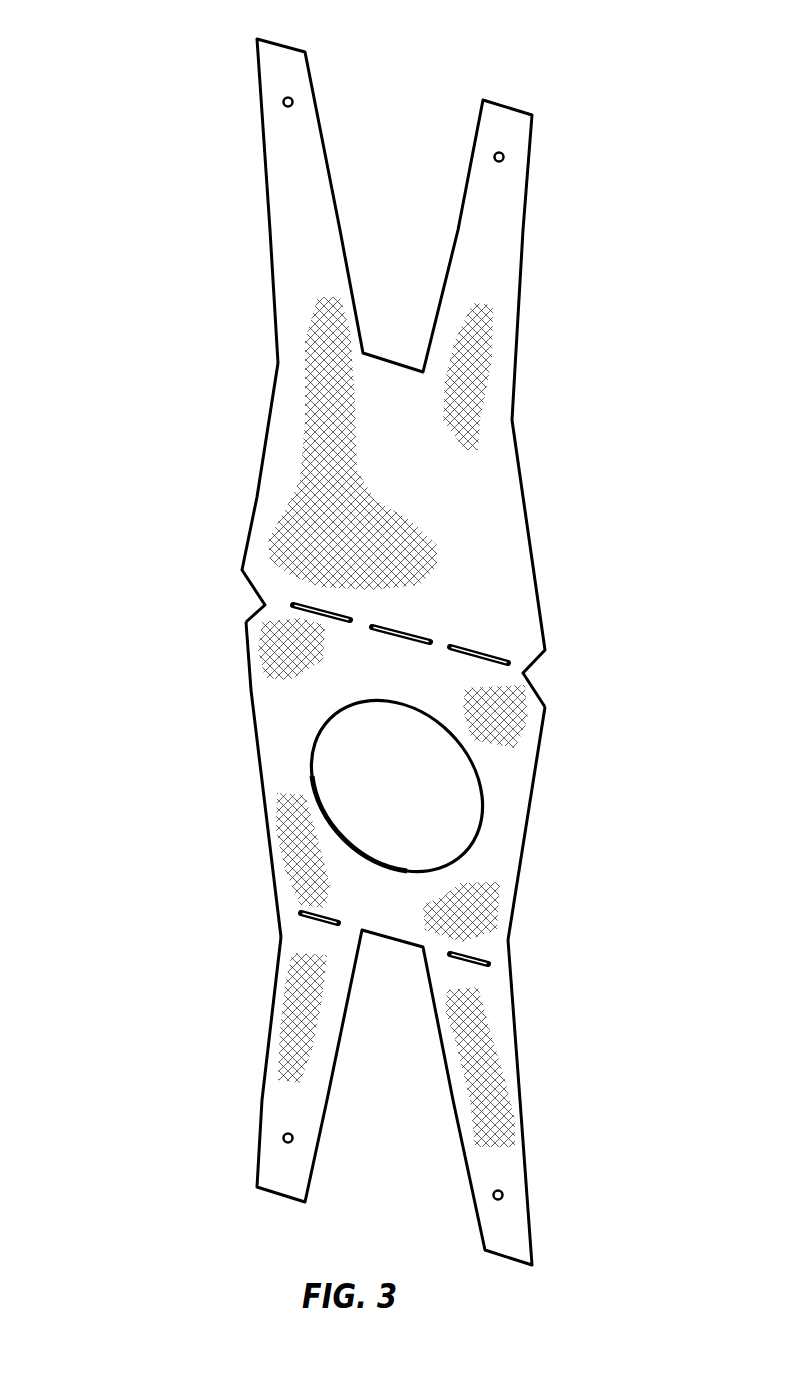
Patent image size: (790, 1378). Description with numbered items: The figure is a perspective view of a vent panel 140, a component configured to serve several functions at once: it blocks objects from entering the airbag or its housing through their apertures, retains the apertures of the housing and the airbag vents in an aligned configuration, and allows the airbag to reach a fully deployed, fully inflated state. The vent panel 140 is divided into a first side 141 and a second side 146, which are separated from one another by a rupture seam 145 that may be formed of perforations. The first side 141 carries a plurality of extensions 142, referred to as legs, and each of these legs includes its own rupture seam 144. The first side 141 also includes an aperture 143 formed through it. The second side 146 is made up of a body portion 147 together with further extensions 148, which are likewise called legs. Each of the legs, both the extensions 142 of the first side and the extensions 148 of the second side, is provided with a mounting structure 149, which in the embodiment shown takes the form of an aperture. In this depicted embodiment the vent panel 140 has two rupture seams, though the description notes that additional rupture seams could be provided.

The vent panel 140 is at (126, 344).
The first side 141 is at (276, 728).
The extensions (legs) 142 is at (453, 1097).
The aperture 143 is at (450, 799).
The rupture seam 144 is at (460, 953).
The rupture seam 145 is at (370, 627).
The second side 146 is at (385, 432).
The body portion 147 is at (478, 505).
The extensions (legs) 148 is at (323, 140).
The mounting structure 149 is at (284, 101).